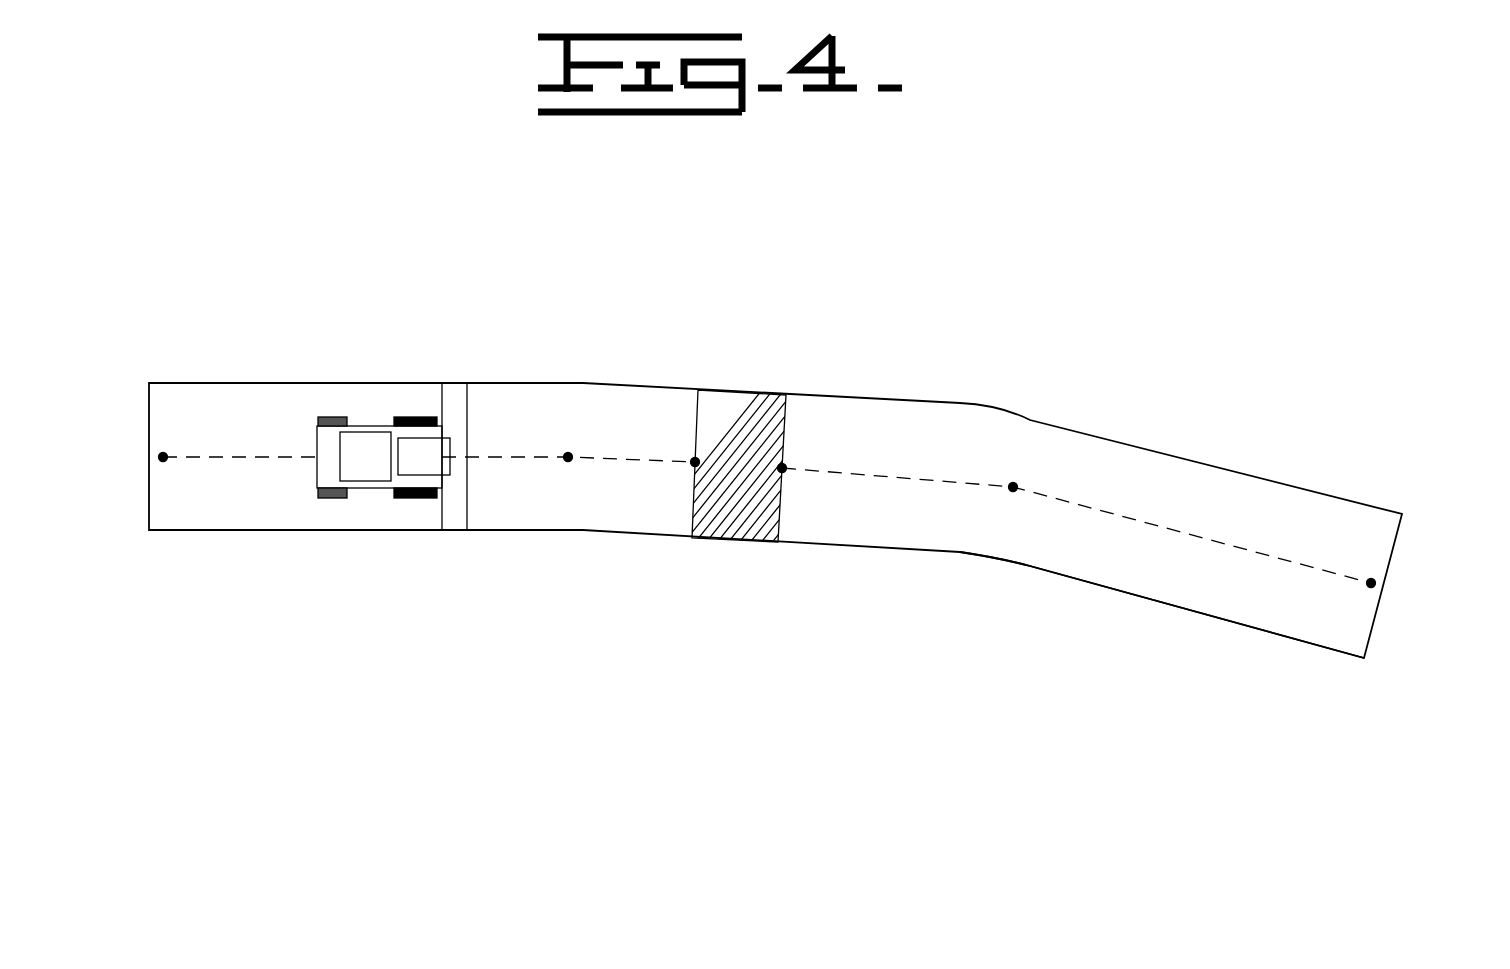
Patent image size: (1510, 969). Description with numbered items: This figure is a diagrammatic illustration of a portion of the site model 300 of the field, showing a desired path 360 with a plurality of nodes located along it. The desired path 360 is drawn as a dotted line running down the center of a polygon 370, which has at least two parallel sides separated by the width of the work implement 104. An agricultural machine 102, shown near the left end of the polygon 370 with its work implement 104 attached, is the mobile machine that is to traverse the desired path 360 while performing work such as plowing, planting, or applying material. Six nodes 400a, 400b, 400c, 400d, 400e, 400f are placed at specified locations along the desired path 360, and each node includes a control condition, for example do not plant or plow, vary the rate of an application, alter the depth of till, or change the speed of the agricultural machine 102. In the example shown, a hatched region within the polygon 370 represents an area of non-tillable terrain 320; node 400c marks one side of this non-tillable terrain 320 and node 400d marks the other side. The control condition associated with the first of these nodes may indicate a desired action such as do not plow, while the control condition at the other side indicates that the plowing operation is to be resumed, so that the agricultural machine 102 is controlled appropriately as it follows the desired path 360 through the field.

The site model 300 is at (1178, 235).
The agricultural machine 102 is at (363, 472).
The work implement 104 is at (455, 520).
The area of non-tillable terrain 320 is at (738, 400).
The desired path 360 is at (622, 460).
The polygon 370 is at (1018, 568).
The node 400a is at (165, 452).
The node 400b is at (568, 457).
The node 400c is at (695, 462).
The node 400d is at (782, 468).
The node 400e is at (1013, 487).
The node 400f is at (1371, 583).